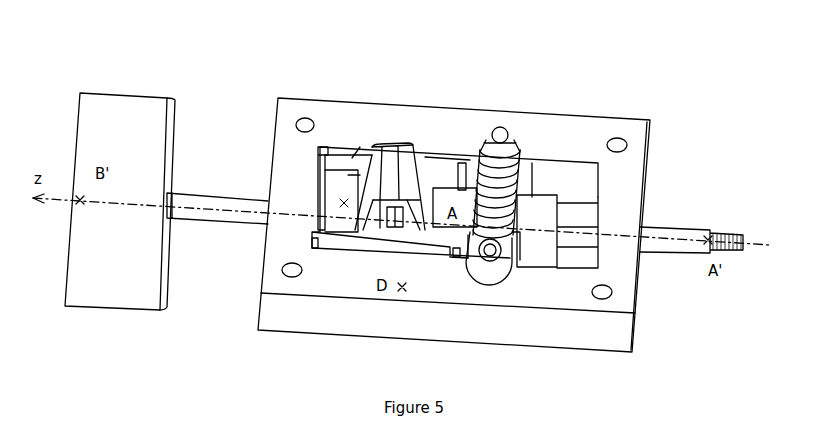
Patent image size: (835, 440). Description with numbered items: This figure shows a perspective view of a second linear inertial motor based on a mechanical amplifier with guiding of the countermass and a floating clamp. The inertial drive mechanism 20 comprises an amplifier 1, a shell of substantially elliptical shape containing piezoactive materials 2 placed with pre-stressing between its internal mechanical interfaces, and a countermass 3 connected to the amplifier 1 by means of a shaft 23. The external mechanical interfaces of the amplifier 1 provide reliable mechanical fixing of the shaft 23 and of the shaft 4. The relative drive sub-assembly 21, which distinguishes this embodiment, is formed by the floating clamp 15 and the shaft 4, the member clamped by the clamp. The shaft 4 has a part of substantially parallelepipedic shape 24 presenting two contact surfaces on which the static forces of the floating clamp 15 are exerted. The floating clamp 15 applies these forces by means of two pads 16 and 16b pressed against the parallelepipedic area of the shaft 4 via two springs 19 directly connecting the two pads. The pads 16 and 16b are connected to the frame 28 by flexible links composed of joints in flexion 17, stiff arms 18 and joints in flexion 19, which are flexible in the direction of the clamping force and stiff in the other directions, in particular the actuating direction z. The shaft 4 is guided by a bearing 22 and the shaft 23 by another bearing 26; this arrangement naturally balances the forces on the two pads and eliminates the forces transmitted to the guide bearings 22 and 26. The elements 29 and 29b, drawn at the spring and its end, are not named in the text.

The amplifier 1 is at (397, 152).
The piezoactive materials 2 is at (387, 220).
The countermass 3 is at (158, 107).
The shaft 4 is at (692, 233).
The floating clamp 15 is at (613, 80).
The pad 16 is at (528, 160).
The pad 16b is at (513, 253).
The joint in flexion 17 is at (463, 163).
The stiff arm 18 is at (347, 160).
The spring 19 is at (322, 148).
The inertial drive mechanism 20 is at (250, 58).
The relative drive sub-assembly 21 is at (690, 65).
The bearing 22 is at (648, 180).
The shaft 23 is at (233, 197).
The part of substantially parallelepipedic shape 24 is at (547, 217).
The bearing 26 is at (257, 233).
The frame 28 is at (590, 127).
The spring 29 is at (500, 128).
The spring end 29b is at (463, 345).